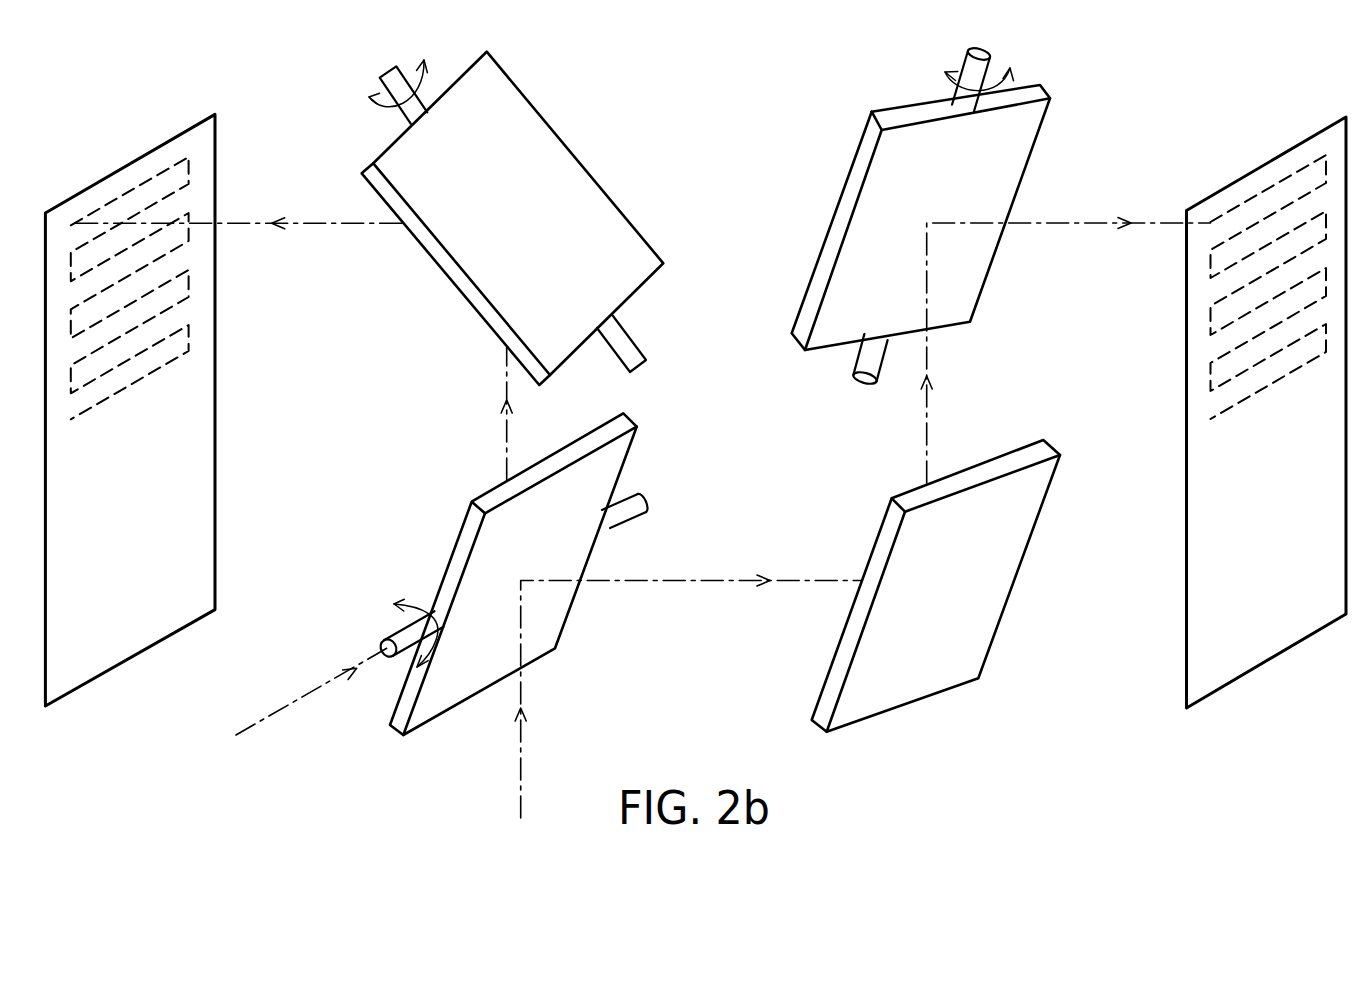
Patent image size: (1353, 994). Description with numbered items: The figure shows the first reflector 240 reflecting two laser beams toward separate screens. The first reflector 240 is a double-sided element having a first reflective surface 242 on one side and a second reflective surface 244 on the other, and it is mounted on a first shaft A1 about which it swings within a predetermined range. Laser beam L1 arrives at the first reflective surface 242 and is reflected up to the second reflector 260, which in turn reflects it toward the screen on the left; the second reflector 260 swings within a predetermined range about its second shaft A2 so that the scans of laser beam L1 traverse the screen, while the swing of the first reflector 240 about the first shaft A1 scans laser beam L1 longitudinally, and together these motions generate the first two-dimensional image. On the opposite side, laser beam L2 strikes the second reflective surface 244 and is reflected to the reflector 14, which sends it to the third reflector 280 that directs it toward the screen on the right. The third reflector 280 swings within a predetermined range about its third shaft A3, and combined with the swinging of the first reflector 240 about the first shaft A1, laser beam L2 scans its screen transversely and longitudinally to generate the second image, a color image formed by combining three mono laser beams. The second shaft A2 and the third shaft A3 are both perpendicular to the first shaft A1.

The reflector 14 is at (987, 573).
The first reflector 240 is at (550, 574).
The first reflective surface 242 is at (506, 481).
The second reflective surface 244 is at (602, 465).
The second reflector 260 is at (552, 183).
The third reflector 280 is at (830, 220).
The first shaft A1 is at (644, 500).
The second shaft A2 is at (388, 75).
The third shaft A3 is at (979, 53).
The laser beam L1 is at (292, 700).
The laser beam L2 is at (684, 713).